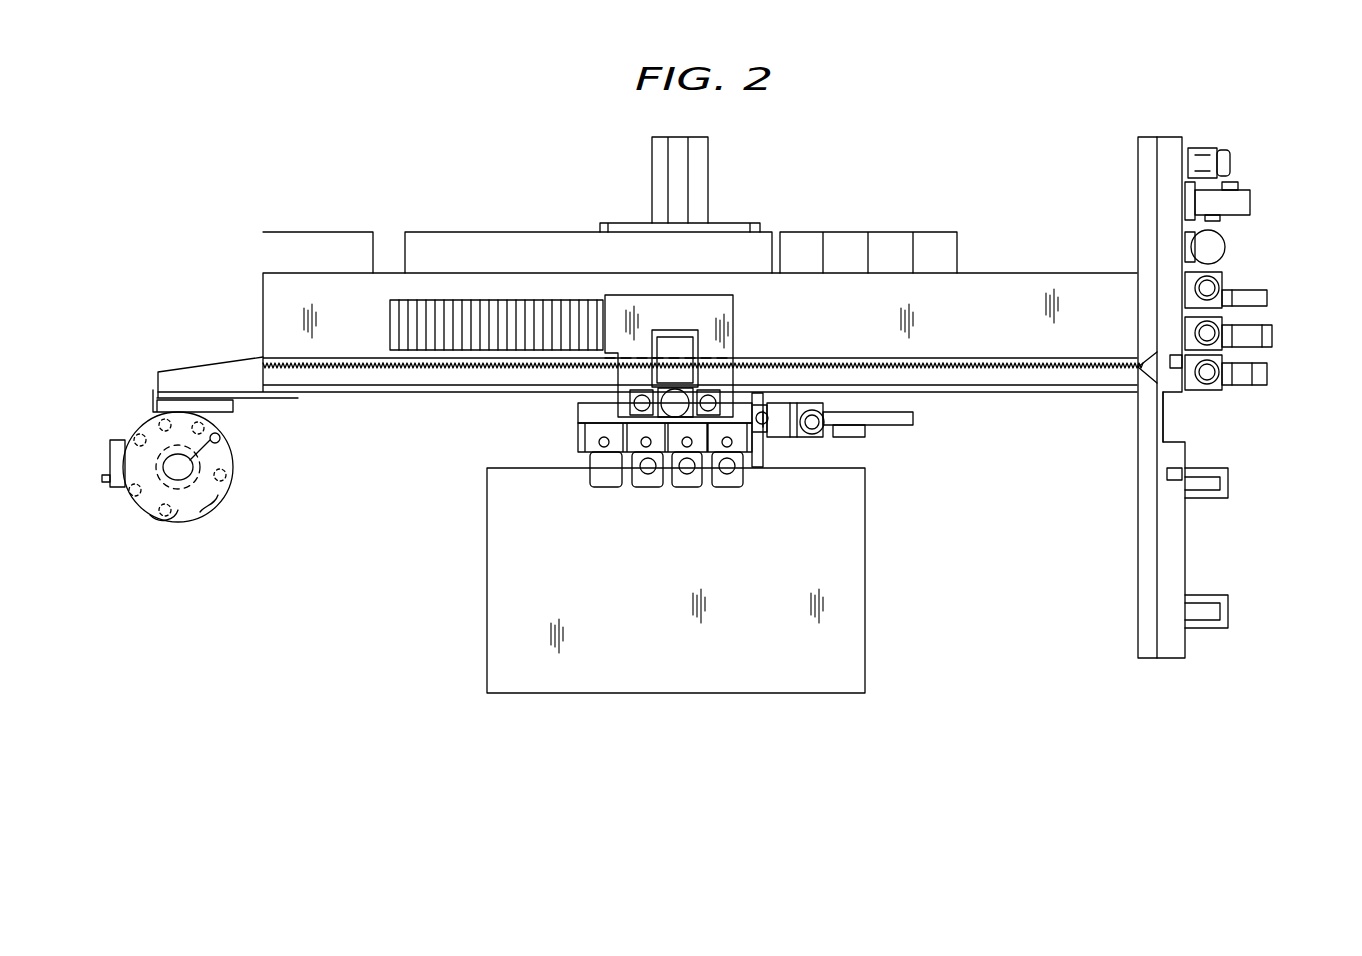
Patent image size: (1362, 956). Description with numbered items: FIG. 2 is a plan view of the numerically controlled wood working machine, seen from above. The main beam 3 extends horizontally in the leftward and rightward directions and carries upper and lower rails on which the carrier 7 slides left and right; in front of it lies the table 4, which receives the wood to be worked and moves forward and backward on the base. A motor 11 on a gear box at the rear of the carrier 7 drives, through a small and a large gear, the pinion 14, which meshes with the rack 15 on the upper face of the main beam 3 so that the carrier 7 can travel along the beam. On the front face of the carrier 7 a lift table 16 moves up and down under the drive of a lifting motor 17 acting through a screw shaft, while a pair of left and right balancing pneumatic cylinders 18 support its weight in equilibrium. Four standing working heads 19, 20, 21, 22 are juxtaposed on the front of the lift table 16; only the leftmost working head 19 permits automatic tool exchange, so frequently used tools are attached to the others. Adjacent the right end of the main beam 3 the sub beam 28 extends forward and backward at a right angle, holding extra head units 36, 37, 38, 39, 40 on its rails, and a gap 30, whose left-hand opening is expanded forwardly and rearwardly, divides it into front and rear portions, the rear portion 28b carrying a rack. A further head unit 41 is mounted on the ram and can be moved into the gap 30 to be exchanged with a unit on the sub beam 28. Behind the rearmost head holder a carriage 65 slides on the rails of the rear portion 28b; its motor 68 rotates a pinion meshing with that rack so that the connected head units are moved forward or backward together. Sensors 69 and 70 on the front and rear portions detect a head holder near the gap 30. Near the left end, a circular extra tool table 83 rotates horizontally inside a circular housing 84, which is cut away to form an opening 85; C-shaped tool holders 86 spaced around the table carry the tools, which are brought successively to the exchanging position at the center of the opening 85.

The main beam 3 is at (1032, 290).
The table 4 is at (668, 680).
The carrier 7 is at (708, 315).
The motor 11 is at (685, 340).
The pinion 14 is at (673, 380).
The rack 15 is at (933, 366).
The lift table 16 is at (577, 413).
The lifting motor 17 is at (698, 383).
The balancing pneumatic cylinders 18 is at (620, 398).
The working head 19 is at (612, 486).
The working head 20 is at (658, 486).
The working head 21 is at (693, 486).
The working head 22 is at (740, 486).
The sub beam 28 is at (1165, 528).
The rear portion of the sub beam 28b is at (1147, 367).
The gap 30 is at (1172, 433).
The extra head unit 36 is at (1262, 370).
The extra head unit 37 is at (1273, 336).
The extra head unit 38 is at (1237, 290).
The extra head unit 39 is at (1230, 245).
The extra head unit 40 is at (1255, 200).
The head unit 41 is at (823, 440).
The carriage 65 is at (1200, 148).
The motor 68 is at (1228, 160).
The sensor 69 is at (1173, 481).
The sensor 70 is at (1182, 393).
The extra tool table 83 is at (188, 475).
The housing 84 is at (160, 515).
The opening 85 is at (220, 440).
The tool holders 86 is at (152, 412).